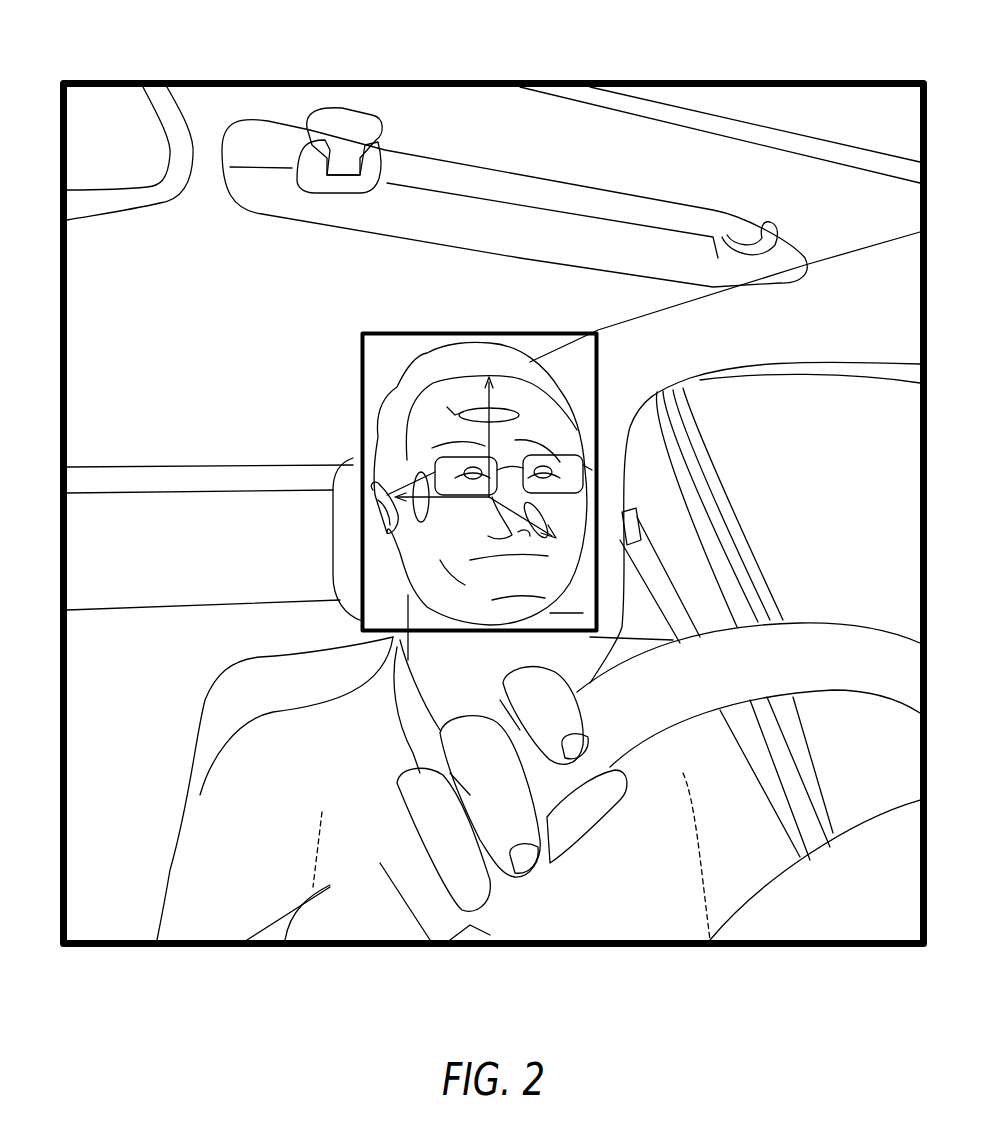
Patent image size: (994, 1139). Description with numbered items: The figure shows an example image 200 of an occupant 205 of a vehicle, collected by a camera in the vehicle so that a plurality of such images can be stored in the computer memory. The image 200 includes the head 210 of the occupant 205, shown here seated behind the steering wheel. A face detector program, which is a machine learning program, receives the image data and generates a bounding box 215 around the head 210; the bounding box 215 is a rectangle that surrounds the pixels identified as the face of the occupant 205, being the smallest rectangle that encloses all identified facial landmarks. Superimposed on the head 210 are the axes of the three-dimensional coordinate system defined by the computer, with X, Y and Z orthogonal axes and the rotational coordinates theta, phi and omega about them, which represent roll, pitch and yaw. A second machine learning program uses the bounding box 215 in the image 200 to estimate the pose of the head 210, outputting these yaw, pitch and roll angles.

The image 200 is at (143, 81).
The occupant 205 is at (327, 737).
The head 210 is at (533, 416).
The bounding box 215 is at (398, 332).